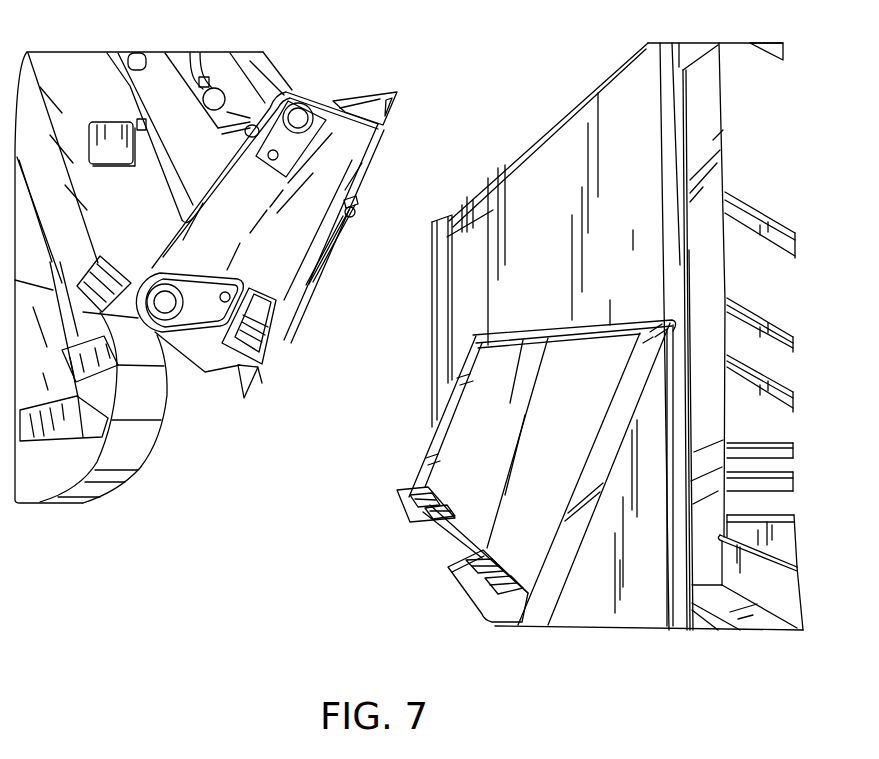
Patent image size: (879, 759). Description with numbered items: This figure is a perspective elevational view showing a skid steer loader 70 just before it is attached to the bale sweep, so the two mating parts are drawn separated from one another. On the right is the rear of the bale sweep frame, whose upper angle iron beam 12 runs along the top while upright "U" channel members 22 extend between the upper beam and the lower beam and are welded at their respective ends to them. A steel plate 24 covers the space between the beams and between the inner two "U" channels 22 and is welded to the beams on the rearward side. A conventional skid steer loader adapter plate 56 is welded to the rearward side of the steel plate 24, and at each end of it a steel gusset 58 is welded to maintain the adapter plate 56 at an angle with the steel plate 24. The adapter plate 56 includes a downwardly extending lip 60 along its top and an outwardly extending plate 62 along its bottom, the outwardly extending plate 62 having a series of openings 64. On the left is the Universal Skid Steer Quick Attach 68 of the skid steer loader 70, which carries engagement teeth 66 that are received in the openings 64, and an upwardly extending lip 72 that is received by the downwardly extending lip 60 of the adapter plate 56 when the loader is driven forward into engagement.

The upper angle iron beam 12 is at (466, 203).
The upright "U" channel members 22 is at (432, 247).
The steel plate 24 is at (647, 120).
The skid steer loader adapter plate 56 is at (465, 432).
The steel gusset 58 is at (602, 602).
The downwardly extending lip 60 is at (613, 327).
The outwardly extending plate 62 is at (408, 515).
The openings 64 is at (400, 492).
The engagement teeth 66 is at (240, 368).
The Universal Skid Steer Quick Attach 68 is at (395, 154).
The skid steer loader 70 is at (290, 71).
The upwardly extending lip 72 is at (393, 110).